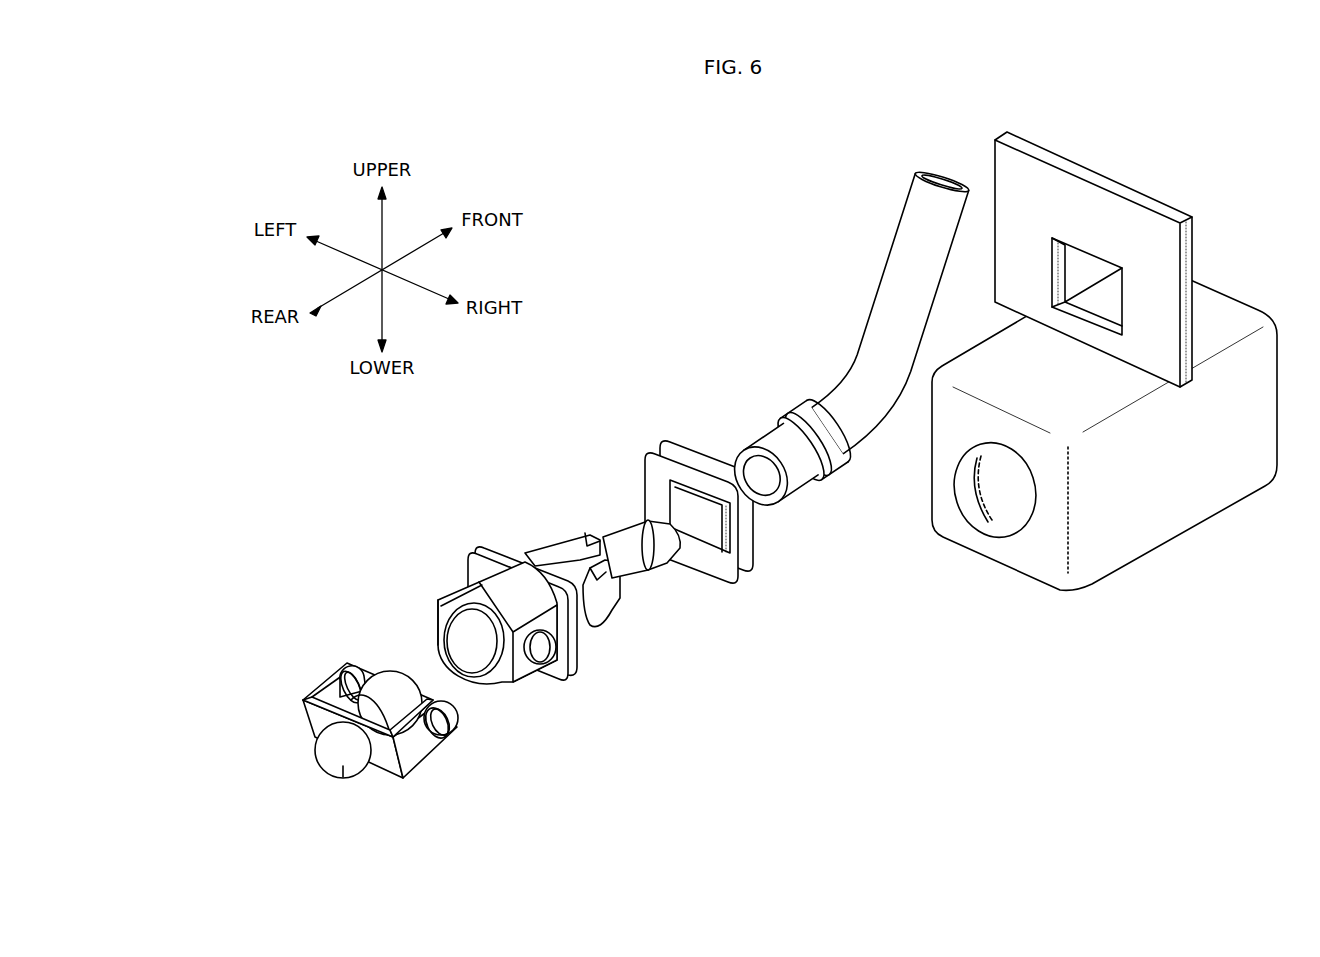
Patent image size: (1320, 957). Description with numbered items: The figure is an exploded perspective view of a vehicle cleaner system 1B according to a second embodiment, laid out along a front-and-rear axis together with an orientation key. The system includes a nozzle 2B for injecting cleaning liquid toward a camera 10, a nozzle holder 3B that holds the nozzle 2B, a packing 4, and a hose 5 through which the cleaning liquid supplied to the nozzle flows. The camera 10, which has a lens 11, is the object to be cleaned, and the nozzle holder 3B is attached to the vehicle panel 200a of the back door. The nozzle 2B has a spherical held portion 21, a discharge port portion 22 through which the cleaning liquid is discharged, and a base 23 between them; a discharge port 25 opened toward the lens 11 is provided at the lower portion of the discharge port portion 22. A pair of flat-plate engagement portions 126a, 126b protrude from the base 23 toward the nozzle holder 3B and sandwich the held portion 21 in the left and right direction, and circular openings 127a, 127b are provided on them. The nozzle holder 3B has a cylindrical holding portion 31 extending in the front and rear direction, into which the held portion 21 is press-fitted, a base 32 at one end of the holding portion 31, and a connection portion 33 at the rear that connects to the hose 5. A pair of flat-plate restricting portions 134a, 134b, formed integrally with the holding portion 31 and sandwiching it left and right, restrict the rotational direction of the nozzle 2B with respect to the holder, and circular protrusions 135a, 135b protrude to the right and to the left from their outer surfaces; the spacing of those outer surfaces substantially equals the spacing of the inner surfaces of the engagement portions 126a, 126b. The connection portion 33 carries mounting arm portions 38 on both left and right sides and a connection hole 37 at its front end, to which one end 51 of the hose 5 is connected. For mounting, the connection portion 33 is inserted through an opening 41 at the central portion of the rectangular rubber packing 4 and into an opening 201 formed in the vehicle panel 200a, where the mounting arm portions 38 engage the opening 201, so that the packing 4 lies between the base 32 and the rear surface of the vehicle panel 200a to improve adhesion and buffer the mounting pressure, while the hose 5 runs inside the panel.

The vehicle cleaner system 1B is at (689, 206).
The nozzle 2B is at (364, 695).
The nozzle holder 3B is at (547, 599).
The packing 4 is at (743, 529).
The hose 5 is at (892, 243).
The camera 10 is at (1100, 438).
The lens 11 is at (980, 515).
The held portion 21 is at (388, 680).
The discharge port portion 22 is at (380, 720).
The base 23 is at (382, 760).
The discharge port 25 is at (344, 765).
The holding portion 31 is at (522, 623).
The base 32 is at (515, 553).
The connection portion 33 is at (673, 543).
The connection hole 37 is at (672, 556).
The mounting arm portions 38 is at (553, 545).
The opening 41 is at (753, 540).
The one end 51 is at (757, 440).
The engagement portion 126a is at (478, 773).
The engagement portion 126b is at (285, 635).
The opening 127a is at (452, 730).
The opening 127b is at (330, 663).
The restricting portion 134a is at (521, 669).
The restricting portion 134b is at (431, 606).
The protrusion 135a is at (548, 648).
The protrusion 135b is at (436, 594).
The vehicle panel 200a is at (1103, 240).
The opening 201 is at (1094, 262).